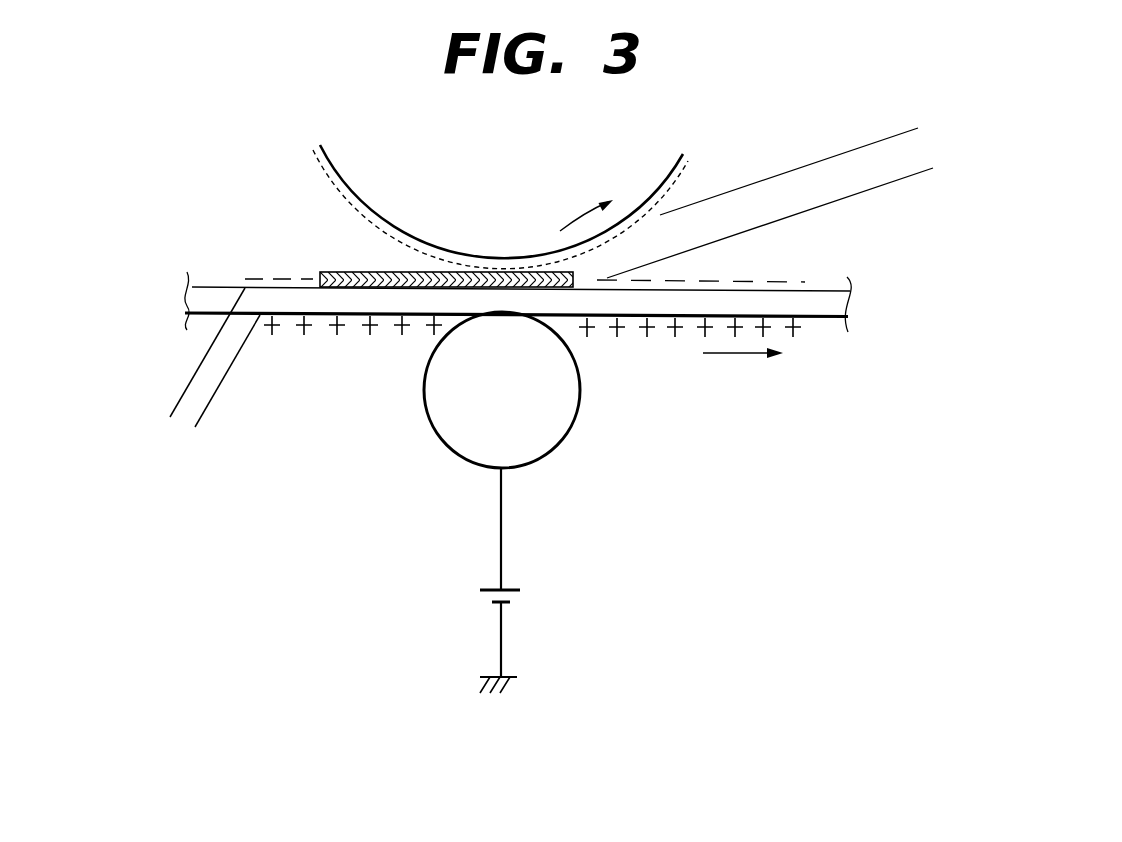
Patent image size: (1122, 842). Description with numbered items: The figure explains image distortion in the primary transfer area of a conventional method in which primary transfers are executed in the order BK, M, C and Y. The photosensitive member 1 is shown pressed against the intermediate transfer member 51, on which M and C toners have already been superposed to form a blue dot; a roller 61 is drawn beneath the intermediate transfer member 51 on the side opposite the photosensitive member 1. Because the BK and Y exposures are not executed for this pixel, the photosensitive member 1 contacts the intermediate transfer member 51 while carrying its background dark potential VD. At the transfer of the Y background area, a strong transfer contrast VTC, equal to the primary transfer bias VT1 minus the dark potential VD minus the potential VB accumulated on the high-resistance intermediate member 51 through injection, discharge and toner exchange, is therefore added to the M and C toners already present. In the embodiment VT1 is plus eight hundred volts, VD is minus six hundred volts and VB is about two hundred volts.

The photosensitive member 1 is at (345, 182).
The intermediate transfer member 51 is at (318, 307).
The transfer roller 61 is at (580, 378).
The dark potential VD is at (677, 180).
The transfer contrast VTC is at (882, 55).
The accumulated potential VB is at (267, 458).
The primary transfer bias VT1 is at (526, 580).